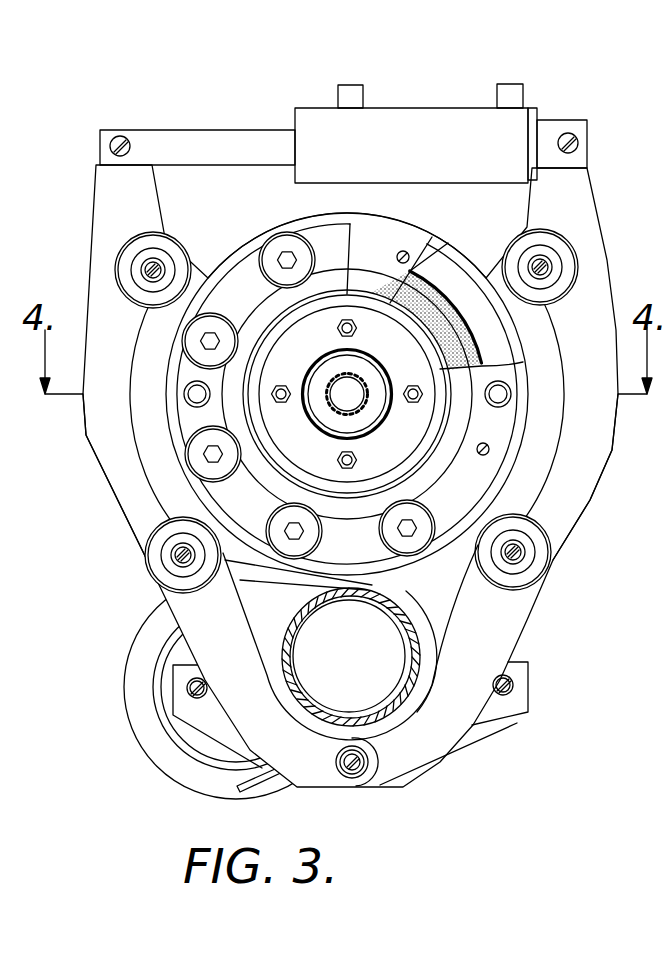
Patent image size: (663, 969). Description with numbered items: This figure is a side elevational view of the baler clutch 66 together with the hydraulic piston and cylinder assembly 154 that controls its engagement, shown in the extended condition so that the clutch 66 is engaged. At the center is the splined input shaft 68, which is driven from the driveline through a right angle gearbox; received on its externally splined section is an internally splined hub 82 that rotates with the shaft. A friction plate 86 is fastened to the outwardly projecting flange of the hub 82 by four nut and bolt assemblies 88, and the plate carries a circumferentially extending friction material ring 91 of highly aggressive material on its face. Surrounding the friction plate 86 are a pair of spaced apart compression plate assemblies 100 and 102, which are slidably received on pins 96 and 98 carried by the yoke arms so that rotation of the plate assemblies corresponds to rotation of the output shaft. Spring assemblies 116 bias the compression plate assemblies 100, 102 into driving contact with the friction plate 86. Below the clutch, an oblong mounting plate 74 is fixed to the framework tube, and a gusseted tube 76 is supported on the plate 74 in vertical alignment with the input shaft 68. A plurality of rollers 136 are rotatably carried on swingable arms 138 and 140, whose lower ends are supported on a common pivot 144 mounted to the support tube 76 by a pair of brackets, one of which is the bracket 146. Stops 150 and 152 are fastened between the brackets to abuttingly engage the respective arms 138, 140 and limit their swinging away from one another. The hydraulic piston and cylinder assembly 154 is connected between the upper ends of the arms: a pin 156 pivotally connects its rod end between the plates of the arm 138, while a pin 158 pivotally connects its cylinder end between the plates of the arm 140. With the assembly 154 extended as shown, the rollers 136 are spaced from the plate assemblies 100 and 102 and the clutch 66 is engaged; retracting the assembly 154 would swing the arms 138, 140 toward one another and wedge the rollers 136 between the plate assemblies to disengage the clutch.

The clutch 66 is at (614, 209).
The splined input shaft 68 is at (340, 387).
The oblong mounting plate 74 is at (150, 737).
The gusseted tube 76 is at (420, 643).
The internally splined hub 82 is at (373, 421).
The friction plate 86 is at (366, 312).
The nut and bolt assemblies 88 is at (358, 328).
The friction material ring 91 is at (468, 256).
The pin 96 is at (193, 389).
The pin 98 is at (505, 389).
The compression plate assembly 100 is at (391, 227).
The compression plate assembly 102 is at (195, 492).
The spring assemblies 116 is at (282, 242).
The rollers 136 is at (130, 253).
The swingable arm 138 is at (88, 428).
The swingable arm 140 is at (585, 502).
The common pivot 144 is at (360, 772).
The bracket 146 is at (488, 725).
The stop 150 is at (188, 684).
The stop 152 is at (512, 680).
The hydraulic piston and cylinder assembly 154 is at (322, 122).
The pin 156 is at (132, 147).
The pin 158 is at (575, 142).